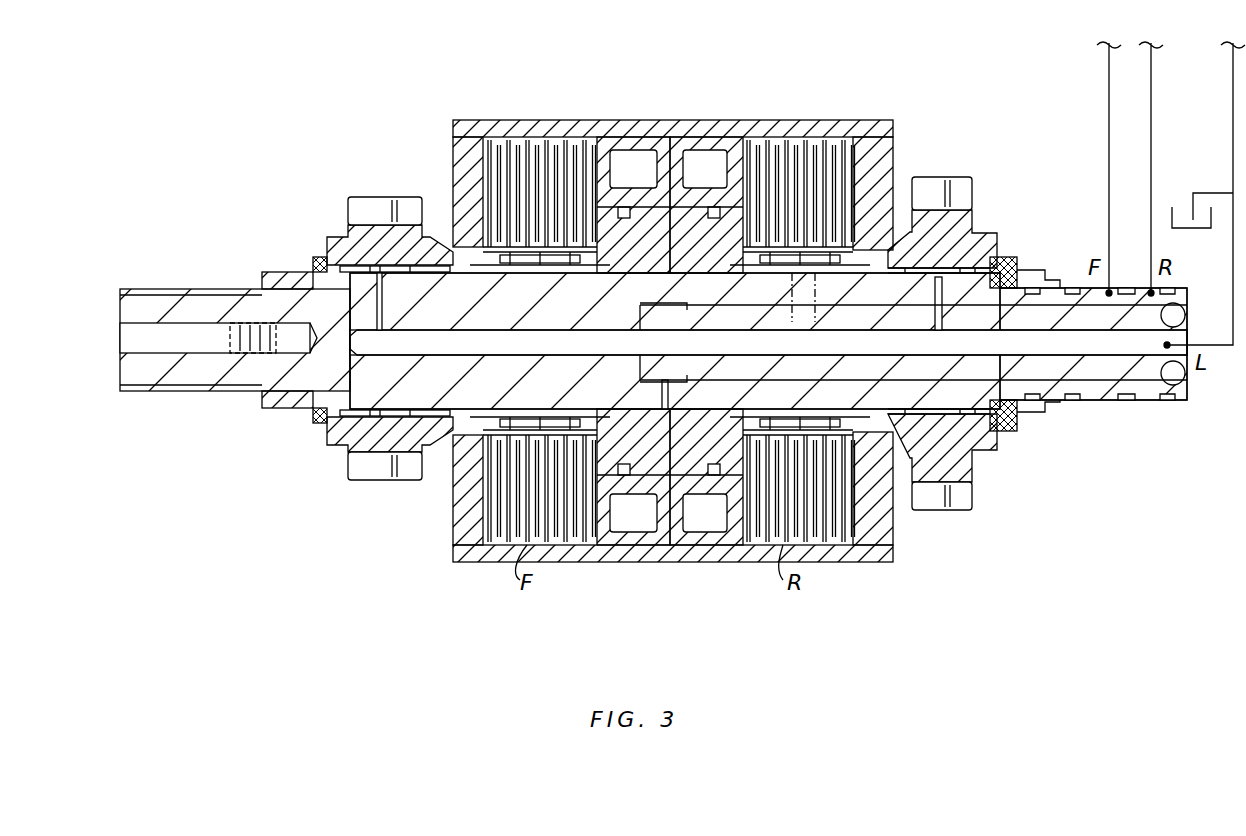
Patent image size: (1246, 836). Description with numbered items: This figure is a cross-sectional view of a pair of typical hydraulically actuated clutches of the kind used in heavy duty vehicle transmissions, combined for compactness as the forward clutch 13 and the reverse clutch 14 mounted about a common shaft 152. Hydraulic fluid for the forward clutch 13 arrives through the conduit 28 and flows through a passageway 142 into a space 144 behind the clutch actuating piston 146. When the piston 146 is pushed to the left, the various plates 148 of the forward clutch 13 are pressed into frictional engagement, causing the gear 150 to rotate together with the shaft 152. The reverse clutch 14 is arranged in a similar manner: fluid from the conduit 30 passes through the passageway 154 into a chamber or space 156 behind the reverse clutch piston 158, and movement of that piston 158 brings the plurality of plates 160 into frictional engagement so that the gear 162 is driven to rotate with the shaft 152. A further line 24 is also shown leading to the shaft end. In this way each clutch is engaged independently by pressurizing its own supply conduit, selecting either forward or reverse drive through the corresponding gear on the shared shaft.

The forward clutch 13 is at (470, 120).
The reverse clutch 14 is at (873, 565).
The lubrication line 24 is at (1211, 230).
The conduit 28 is at (1109, 120).
The conduit 30 is at (1151, 140).
The passageway 142 is at (1050, 313).
The space 144 is at (672, 127).
The clutch actuating piston 146 is at (619, 127).
The plates 148 is at (503, 165).
The gear 150 is at (367, 197).
The shaft 152 is at (212, 258).
The passageway 154 is at (1103, 375).
The chamber or space 156 is at (673, 470).
The reverse clutch piston 158 is at (705, 463).
The plates 160 is at (815, 515).
The gear 162 is at (955, 500).